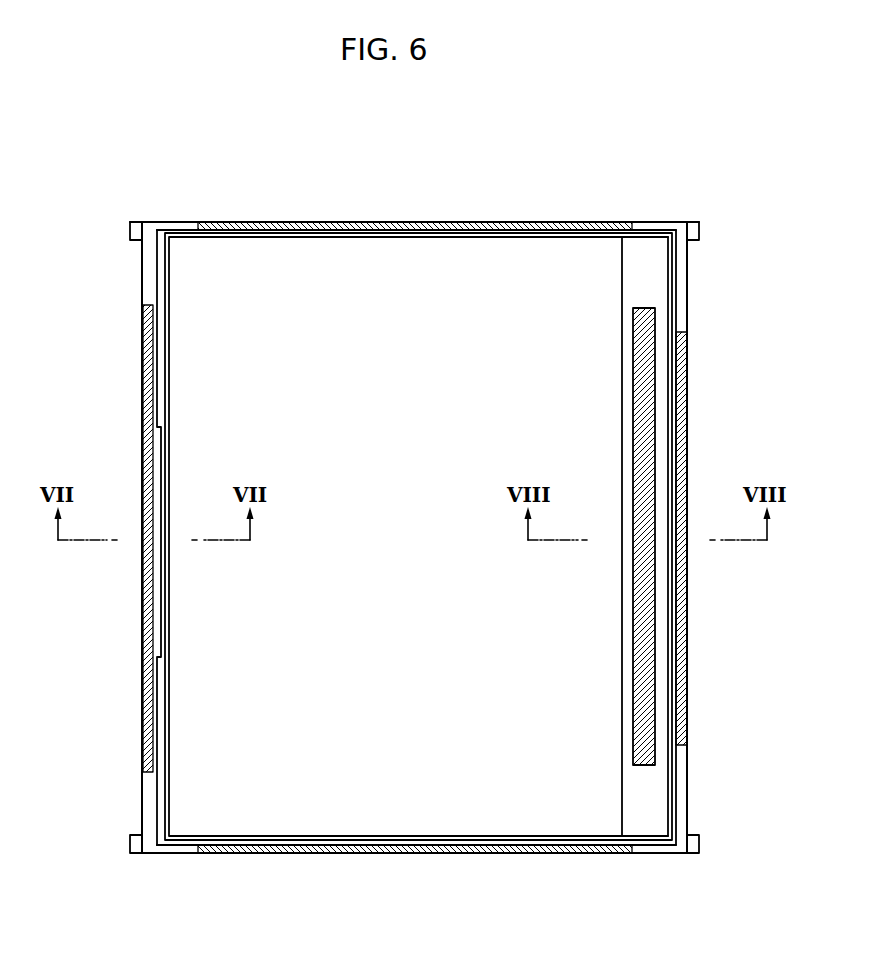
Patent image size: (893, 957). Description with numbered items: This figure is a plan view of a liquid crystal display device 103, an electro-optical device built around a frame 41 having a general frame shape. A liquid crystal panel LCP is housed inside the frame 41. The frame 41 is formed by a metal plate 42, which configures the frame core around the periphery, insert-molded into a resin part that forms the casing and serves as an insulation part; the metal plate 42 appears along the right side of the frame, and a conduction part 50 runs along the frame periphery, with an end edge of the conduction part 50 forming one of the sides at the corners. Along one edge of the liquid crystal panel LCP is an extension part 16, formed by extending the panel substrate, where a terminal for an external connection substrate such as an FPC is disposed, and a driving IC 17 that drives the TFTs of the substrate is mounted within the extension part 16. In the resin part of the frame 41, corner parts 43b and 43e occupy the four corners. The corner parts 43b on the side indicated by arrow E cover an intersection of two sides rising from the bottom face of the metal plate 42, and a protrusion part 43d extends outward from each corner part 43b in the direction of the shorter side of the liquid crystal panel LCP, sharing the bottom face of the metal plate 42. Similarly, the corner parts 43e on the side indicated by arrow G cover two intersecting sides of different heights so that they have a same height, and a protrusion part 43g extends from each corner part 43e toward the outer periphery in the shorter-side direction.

The liquid crystal display device 103 is at (720, 125).
The frame 41 is at (430, 185).
The metal plate 42 is at (688, 412).
The corner part 43b is at (177, 226).
The protrusion part 43d is at (130, 233).
The corner part 43e is at (657, 226).
The protrusion part 43g is at (700, 229).
The conduction part 50 is at (513, 214).
The liquid crystal panel LCP is at (270, 263).
The extension part 16 is at (655, 808).
The driving IC 17 is at (650, 698).
The arrow E is at (121, 210).
The arrow G is at (704, 208).